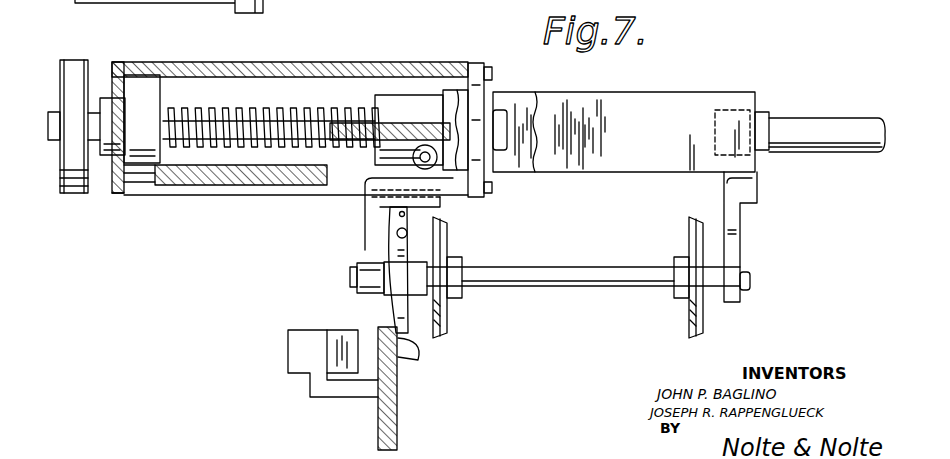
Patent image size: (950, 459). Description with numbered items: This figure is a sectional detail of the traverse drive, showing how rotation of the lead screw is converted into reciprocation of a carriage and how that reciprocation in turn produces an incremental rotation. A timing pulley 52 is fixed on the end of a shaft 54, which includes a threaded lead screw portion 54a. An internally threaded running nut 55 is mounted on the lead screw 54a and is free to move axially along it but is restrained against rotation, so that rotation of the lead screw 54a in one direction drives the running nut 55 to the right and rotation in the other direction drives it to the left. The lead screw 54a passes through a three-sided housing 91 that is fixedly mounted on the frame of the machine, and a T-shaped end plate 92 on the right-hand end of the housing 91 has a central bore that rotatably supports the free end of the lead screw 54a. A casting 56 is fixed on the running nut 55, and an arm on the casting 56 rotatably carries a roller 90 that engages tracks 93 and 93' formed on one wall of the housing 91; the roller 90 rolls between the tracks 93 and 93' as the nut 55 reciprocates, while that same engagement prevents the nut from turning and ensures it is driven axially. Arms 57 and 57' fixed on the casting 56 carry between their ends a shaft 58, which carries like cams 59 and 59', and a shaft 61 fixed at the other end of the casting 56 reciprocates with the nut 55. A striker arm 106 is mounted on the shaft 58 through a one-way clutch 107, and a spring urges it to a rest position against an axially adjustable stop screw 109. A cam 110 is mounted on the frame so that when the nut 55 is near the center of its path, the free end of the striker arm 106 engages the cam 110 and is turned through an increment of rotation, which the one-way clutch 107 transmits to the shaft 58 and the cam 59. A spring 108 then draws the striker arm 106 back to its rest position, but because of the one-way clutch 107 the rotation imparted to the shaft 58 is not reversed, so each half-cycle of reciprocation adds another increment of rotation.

The timing pulley 52 is at (72, 194).
The shaft 54 is at (93, 113).
The lead screw 54a is at (203, 106).
The running nut 55 is at (387, 100).
The casting 56 is at (690, 106).
The arm 57 is at (358, 271).
The arm 57' is at (756, 237).
The shaft 58 is at (566, 288).
The cam 59 is at (461, 278).
The cam 59' is at (661, 277).
The shaft 61 is at (830, 120).
The roller 90 is at (428, 168).
The three-sided housing 91 is at (292, 70).
The T-shaped end plate 92 is at (470, 70).
The track 93 is at (392, 84).
The track 93' is at (225, 156).
The striker arm 106 is at (396, 311).
The one-way clutch 107 is at (355, 280).
The spring 108 is at (388, 213).
The stop screw 109 is at (397, 233).
The cam 110 is at (288, 345).